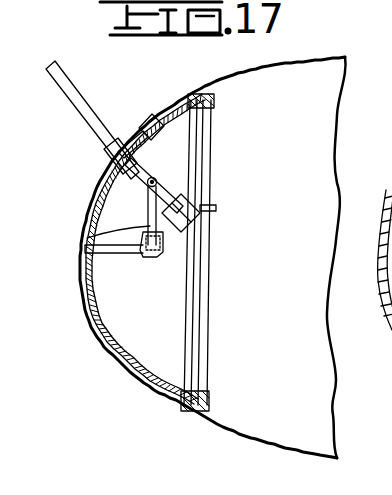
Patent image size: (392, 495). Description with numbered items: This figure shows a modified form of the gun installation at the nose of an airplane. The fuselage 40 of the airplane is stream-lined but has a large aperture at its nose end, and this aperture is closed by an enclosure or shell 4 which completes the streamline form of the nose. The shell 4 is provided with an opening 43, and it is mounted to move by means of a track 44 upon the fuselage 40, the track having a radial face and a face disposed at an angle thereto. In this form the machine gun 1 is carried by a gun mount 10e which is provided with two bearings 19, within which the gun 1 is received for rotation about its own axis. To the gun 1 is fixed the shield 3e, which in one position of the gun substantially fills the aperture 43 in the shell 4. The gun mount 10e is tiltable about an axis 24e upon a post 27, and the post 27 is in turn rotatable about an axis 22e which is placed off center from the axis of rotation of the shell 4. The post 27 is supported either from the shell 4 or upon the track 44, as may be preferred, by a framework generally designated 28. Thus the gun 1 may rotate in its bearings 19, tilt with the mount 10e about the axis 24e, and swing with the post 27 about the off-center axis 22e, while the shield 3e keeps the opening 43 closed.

The machine gun 1 is at (59, 71).
The shield 3e is at (112, 160).
The shell 4 is at (124, 249).
The gun mount 10e is at (146, 163).
The bearings 19 is at (190, 195).
The axis 22e is at (146, 246).
The axis 24e is at (150, 190).
The post 27 is at (152, 245).
The framework 28 is at (120, 350).
The fuselage 40 is at (296, 448).
The opening 43 is at (92, 196).
The track 44 is at (214, 108).